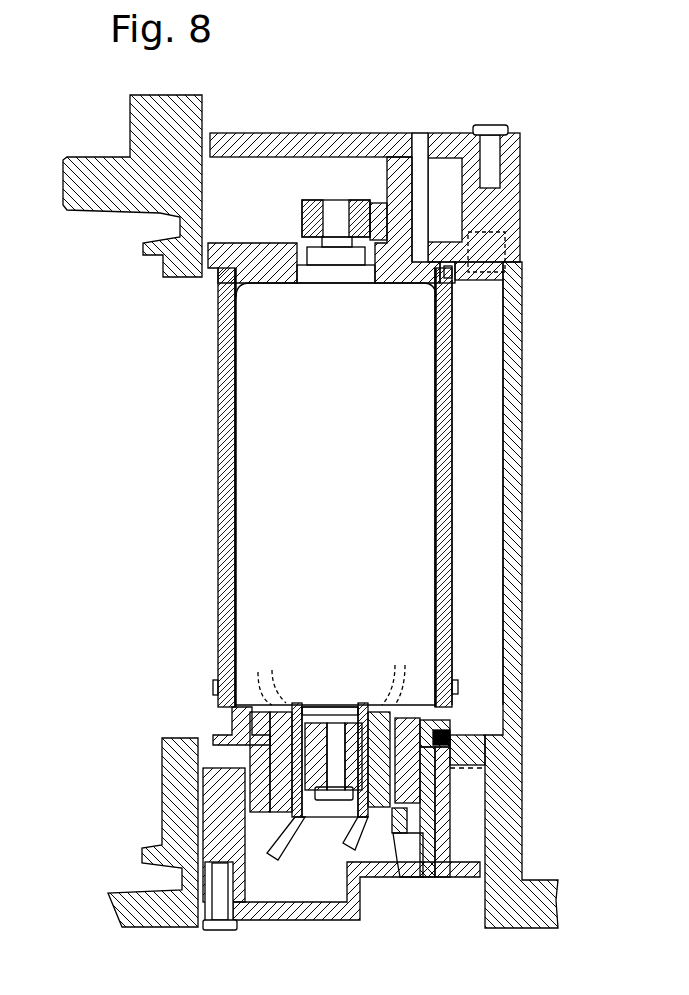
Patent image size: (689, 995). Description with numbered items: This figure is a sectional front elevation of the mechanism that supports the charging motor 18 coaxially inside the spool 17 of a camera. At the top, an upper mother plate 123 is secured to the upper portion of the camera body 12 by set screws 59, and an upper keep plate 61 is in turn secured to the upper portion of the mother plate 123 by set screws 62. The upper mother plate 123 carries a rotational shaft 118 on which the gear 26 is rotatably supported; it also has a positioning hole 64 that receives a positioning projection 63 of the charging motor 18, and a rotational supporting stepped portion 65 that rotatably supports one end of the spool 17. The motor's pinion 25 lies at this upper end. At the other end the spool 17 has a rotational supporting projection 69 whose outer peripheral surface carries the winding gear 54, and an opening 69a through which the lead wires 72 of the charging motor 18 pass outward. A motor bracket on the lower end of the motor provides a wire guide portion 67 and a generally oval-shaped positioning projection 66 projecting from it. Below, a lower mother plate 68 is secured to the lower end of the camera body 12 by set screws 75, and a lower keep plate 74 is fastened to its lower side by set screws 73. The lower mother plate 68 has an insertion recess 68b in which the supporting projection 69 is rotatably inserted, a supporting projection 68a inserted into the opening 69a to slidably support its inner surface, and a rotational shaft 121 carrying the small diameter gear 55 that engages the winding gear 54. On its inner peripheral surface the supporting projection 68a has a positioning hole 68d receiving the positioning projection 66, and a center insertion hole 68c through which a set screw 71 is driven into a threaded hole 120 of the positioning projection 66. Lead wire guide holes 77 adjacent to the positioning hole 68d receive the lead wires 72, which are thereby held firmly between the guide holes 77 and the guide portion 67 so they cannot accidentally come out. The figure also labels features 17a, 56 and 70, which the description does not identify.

The camera body 12 is at (515, 508).
The spool 17 is at (220, 486).
The annular gap 17a is at (453, 315).
The charging motor 18 is at (243, 552).
The pinion 25 is at (305, 205).
The gear 26 is at (393, 160).
The winding gear 54 is at (240, 775).
The small diameter gear 55 is at (482, 790).
The bolt 56 is at (398, 870).
The set screws 59 is at (520, 232).
The upper keep plate 61 is at (228, 140).
The set screws 62 is at (500, 127).
The positioning projection 63 is at (307, 282).
The positioning hole 64 is at (300, 248).
The rotational supporting stepped portion 65 is at (457, 287).
The positioning projection 66 is at (312, 722).
The wire guide portion 67 is at (380, 712).
The lower mother plate 68 is at (235, 780).
The supporting projection 68a is at (440, 708).
The insertion recess 68b is at (225, 783).
The center insertion hole 68c is at (330, 722).
The positioning hole 68d is at (410, 703).
The rotational supporting projection 69 is at (225, 732).
The opening 69a is at (250, 703).
The stop 70 is at (215, 685).
The set screw 71 is at (330, 800).
The lead wires 72 is at (343, 850).
The set screws 73 is at (220, 930).
The lower keep plate 74 is at (470, 880).
The set screws 75 is at (485, 770).
The lead wire guide holes 77 is at (220, 797).
The rotational shaft 118 is at (447, 167).
The threaded hole 120 is at (350, 714).
The rotational shaft 121 is at (450, 828).
The upper mother plate 123 is at (513, 195).